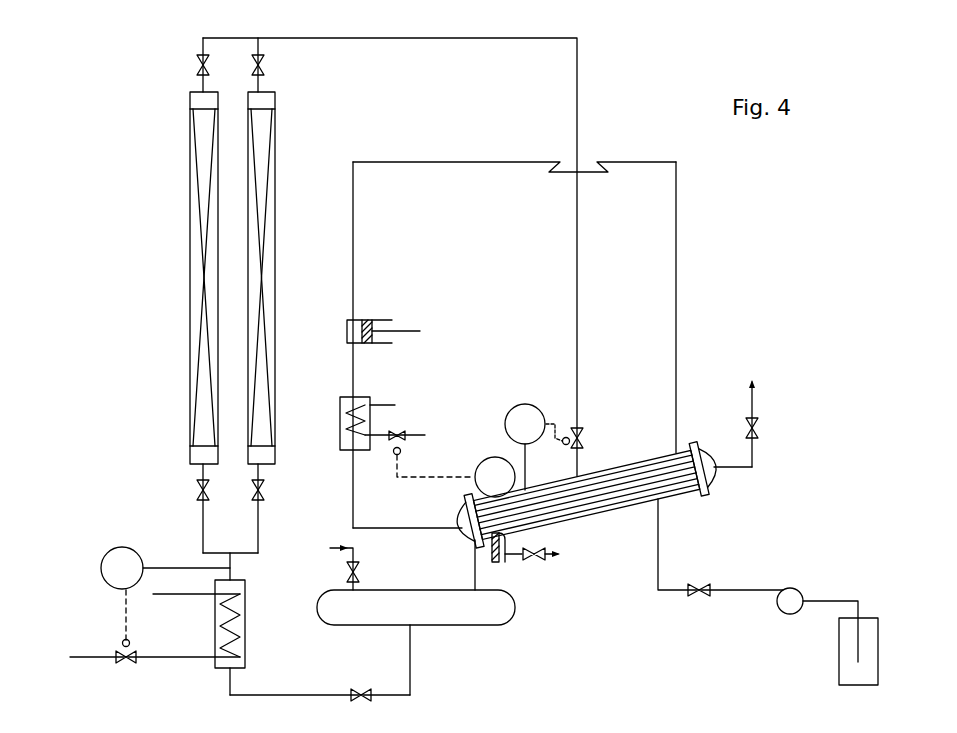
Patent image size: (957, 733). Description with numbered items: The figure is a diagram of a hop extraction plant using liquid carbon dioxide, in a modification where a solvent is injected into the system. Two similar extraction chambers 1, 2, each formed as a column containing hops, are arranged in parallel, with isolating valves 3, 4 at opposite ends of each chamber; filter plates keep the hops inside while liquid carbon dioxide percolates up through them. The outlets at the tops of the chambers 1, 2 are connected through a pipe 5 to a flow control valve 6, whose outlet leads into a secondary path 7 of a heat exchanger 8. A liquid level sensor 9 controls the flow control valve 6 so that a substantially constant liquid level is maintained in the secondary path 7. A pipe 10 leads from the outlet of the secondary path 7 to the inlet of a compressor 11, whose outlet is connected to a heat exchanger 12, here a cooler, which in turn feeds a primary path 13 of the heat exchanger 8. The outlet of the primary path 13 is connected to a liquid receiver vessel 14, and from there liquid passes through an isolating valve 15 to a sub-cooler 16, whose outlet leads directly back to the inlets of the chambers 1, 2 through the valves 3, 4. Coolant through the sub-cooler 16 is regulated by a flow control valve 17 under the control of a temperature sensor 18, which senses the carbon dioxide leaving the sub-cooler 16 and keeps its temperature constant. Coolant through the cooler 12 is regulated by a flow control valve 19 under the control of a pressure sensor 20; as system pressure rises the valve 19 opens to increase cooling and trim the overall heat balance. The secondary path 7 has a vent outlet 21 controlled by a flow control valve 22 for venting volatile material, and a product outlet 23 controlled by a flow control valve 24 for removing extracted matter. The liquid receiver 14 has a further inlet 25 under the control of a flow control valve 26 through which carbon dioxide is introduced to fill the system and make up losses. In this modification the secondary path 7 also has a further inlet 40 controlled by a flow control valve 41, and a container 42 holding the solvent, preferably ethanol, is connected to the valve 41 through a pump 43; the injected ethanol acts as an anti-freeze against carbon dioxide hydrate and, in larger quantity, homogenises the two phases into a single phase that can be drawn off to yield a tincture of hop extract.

The extraction chamber 1 is at (196, 278).
The extraction chamber 2 is at (266, 277).
The isolating valve 3 is at (196, 68).
The isolating valve 4 is at (265, 63).
The pipe 5 is at (577, 89).
The flow control valve 6 is at (585, 436).
The secondary path 7 is at (603, 472).
The heat exchanger 8 is at (580, 508).
The liquid level sensor 9 is at (520, 419).
The pipe 10 is at (676, 283).
The compressor 11 is at (373, 320).
The heat exchanger 12 is at (370, 403).
The primary path 13 is at (478, 542).
The liquid receiver vessel 14 is at (500, 612).
The isolating valve 15 is at (355, 690).
The sub-cooler 16 is at (242, 643).
The flow control valve 17 is at (125, 664).
The temperature sensor 18 is at (120, 560).
The flow control valve 19 is at (405, 432).
The pressure sensor 20 is at (495, 465).
The vent outlet 21 is at (717, 470).
The flow control valve 22 is at (758, 428).
The product outlet 23 is at (507, 563).
The flow control valve 24 is at (537, 563).
The further inlet 25 is at (358, 584).
The flow control valve 26 is at (347, 572).
The further inlet 40 is at (658, 545).
The flow control valve 41 is at (690, 597).
The container 42 is at (860, 652).
The pump 43 is at (792, 600).